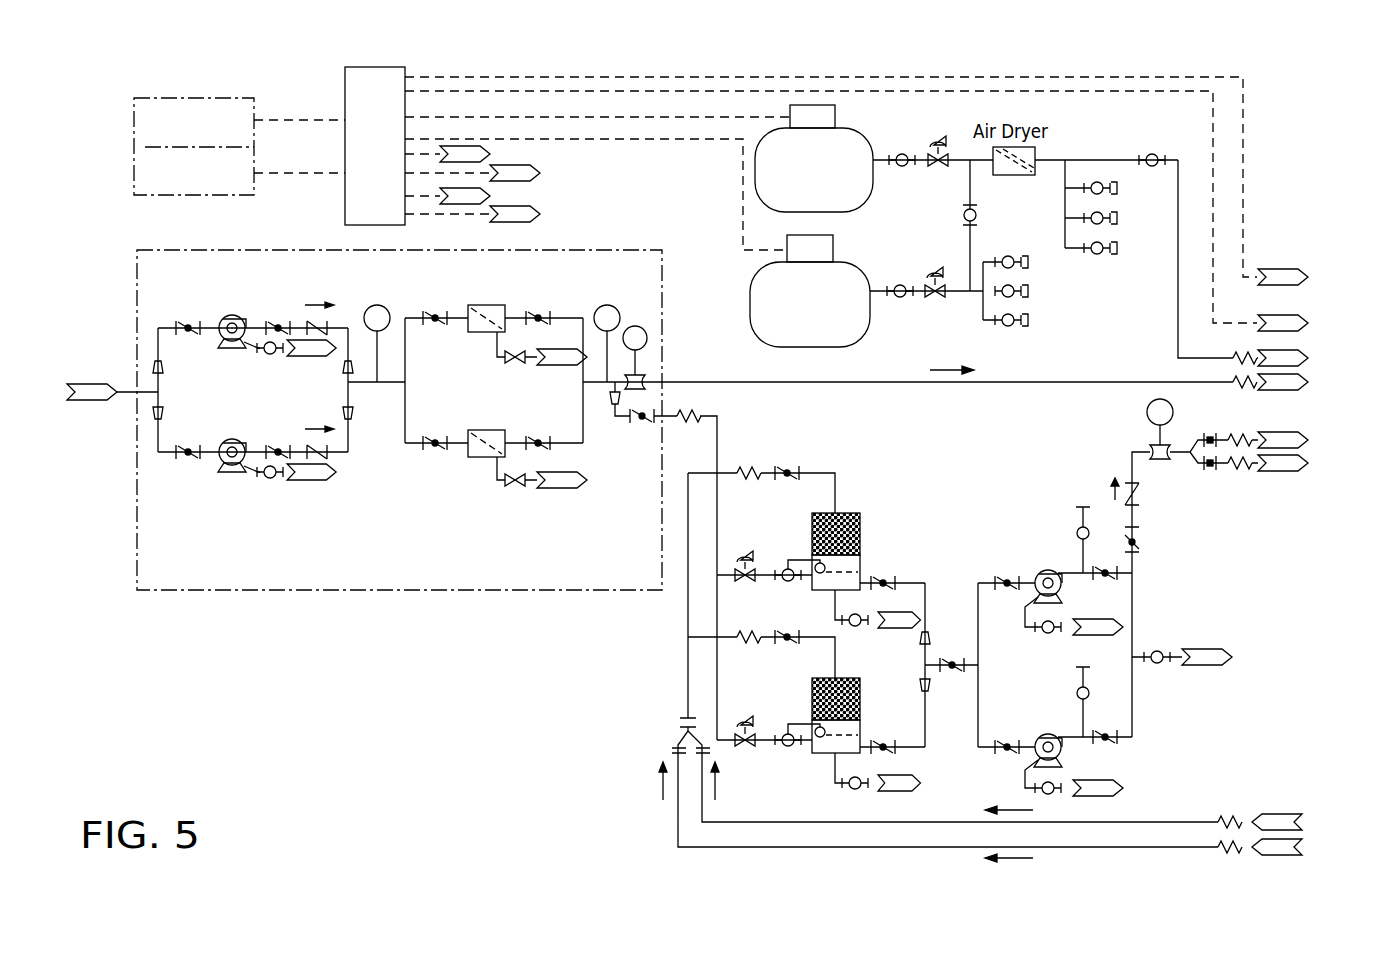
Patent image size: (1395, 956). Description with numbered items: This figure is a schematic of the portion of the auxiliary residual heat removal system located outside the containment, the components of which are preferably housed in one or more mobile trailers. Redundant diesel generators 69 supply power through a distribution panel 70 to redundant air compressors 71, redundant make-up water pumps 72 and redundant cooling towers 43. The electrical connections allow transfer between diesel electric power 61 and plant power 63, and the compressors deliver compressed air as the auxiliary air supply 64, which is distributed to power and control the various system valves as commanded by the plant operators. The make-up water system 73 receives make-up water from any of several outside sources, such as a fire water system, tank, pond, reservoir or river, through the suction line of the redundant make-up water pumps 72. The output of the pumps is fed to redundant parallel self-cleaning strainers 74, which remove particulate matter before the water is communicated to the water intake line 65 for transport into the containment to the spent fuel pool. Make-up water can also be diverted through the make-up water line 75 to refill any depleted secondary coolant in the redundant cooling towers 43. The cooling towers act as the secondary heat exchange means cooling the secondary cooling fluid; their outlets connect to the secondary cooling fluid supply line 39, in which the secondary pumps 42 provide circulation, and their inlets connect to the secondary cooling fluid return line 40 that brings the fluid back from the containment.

The diesel generators 69 is at (134, 120).
The distribution panel 70 is at (390, 160).
The air compressors 71 is at (866, 138).
The make-up water pumps 72 is at (225, 318).
The cooling towers 43 is at (840, 513).
The diesel electric power 61 is at (1275, 272).
The plant power 63 is at (1280, 318).
The auxiliary air supply 64 is at (1292, 350).
The water intake line 65 is at (1298, 392).
The secondary cooling fluid supply line 39 is at (1190, 452).
The make-up water system 73 is at (408, 576).
The self-cleaning strainers 74 is at (483, 334).
The make-up water line 75 is at (717, 440).
The secondary pumps 42 is at (1043, 569).
The secondary cooling fluid return line 40 is at (1157, 822).